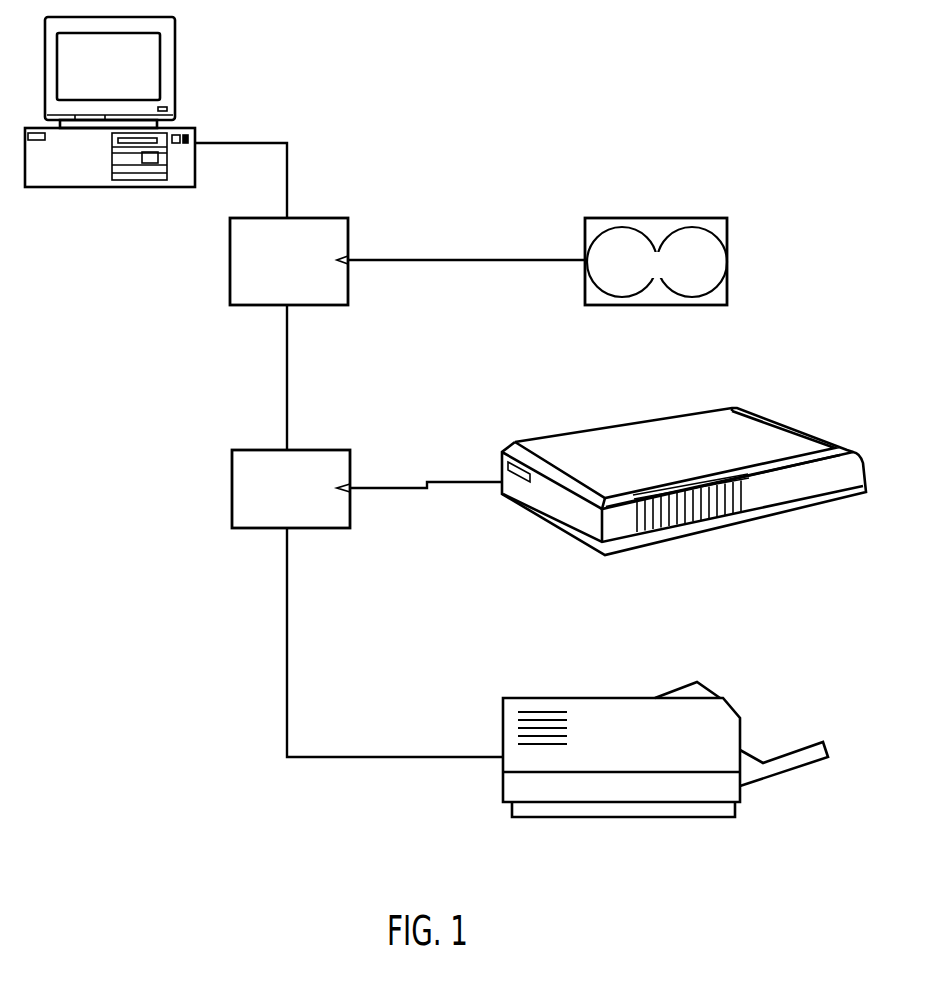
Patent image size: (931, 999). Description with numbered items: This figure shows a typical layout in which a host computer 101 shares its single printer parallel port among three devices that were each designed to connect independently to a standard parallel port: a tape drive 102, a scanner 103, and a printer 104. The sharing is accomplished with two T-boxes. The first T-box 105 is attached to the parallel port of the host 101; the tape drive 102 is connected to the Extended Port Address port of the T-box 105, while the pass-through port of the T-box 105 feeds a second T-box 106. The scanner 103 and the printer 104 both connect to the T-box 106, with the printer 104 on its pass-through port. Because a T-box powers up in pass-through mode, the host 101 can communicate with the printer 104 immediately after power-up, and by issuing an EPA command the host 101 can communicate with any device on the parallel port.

The host computer 101 is at (53, 188).
The tape drive 102 is at (622, 217).
The scanner 103 is at (627, 553).
The printer 104 is at (528, 698).
The T-box 105 is at (318, 218).
The second T-box 106 is at (350, 472).